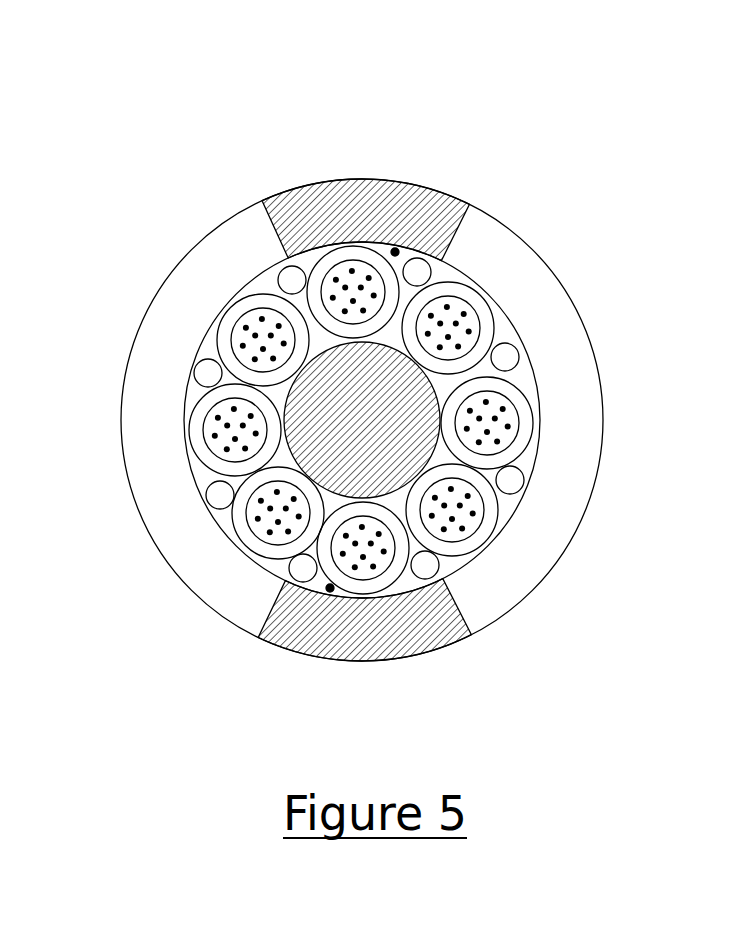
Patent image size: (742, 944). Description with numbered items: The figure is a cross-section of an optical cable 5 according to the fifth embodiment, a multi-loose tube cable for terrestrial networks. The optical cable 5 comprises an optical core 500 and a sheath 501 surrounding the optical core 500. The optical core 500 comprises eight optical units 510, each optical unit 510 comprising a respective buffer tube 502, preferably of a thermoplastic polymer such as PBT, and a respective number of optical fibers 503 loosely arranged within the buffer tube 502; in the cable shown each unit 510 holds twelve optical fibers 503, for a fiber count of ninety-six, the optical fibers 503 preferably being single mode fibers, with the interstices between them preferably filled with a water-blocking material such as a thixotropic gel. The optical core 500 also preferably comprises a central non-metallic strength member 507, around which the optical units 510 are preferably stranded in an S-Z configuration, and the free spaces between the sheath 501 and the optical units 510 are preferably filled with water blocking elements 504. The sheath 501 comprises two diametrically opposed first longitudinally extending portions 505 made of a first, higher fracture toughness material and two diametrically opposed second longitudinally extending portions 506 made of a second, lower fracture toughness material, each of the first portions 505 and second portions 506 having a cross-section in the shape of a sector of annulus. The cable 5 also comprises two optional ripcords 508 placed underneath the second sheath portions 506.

The optical cable 5 is at (168, 117).
The optical core 500 is at (225, 292).
The sheath 501 is at (462, 168).
The buffer tube 502 is at (482, 292).
The optical fibers 503 is at (468, 328).
The water blocking elements 504 is at (522, 492).
The first longitudinally extending portions 505 is at (143, 312).
The second longitudinally extending portions 506 is at (373, 177).
The central non-metallic strength member 507 is at (437, 452).
The ripcords 508 is at (395, 252).
The optical unit 510 is at (500, 313).